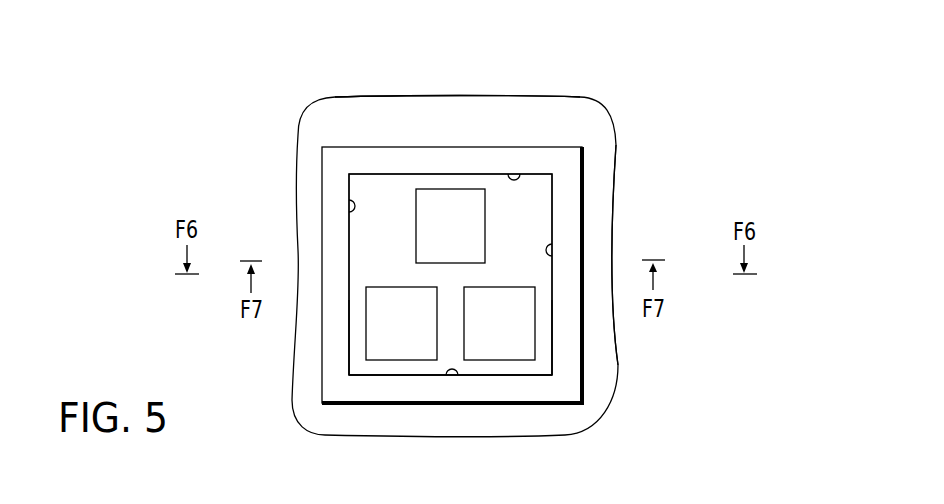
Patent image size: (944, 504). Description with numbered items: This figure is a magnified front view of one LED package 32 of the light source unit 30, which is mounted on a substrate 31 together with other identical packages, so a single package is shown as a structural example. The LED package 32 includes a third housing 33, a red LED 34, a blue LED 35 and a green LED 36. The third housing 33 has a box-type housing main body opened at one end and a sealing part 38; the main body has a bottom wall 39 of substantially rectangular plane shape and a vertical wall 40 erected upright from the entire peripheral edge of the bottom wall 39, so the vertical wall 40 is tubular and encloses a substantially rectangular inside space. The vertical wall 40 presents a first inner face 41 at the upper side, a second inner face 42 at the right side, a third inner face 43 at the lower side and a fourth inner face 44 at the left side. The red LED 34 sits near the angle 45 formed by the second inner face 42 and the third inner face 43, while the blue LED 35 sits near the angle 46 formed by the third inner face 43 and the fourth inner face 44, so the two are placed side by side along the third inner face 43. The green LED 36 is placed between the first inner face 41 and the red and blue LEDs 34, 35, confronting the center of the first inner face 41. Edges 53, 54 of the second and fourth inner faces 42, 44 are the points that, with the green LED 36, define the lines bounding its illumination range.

The light source unit 30 is at (534, 72).
The substrate 31 is at (446, 100).
The LED package 32 is at (571, 137).
The third housing 33 is at (576, 185).
The red LED 34 is at (505, 350).
The blue LED 35 is at (402, 350).
The green LED 36 is at (449, 193).
The sealing part 38 is at (372, 258).
The bottom wall 39 is at (377, 185).
The vertical wall 40 is at (575, 217).
The first inner face 41 is at (515, 174).
The second inner face 42 is at (556, 250).
The third inner face 43 is at (455, 382).
The fourth inner face 44 is at (349, 200).
The angle 45 is at (547, 363).
The angle 46 is at (358, 372).
The edge 53 is at (553, 332).
The edge 54 is at (350, 339).